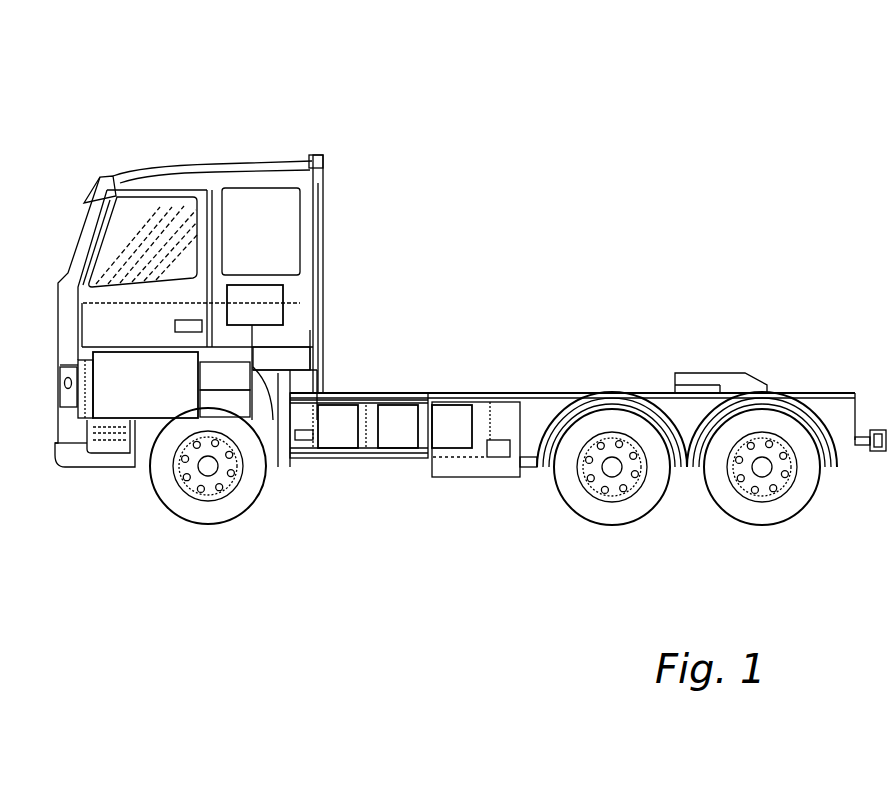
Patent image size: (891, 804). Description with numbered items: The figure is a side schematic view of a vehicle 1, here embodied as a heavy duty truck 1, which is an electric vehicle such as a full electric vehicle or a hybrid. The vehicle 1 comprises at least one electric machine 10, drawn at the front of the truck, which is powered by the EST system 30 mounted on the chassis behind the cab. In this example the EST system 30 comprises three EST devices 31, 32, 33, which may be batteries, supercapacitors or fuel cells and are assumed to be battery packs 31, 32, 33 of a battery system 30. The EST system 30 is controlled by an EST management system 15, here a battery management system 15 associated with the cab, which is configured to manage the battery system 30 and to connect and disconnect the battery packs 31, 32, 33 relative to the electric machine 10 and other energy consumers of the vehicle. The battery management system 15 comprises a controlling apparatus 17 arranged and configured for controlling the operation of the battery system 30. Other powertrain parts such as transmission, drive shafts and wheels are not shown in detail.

The vehicle 1 is at (160, 102).
The electric machine 10 is at (108, 418).
The EST management system 15 is at (329, 307).
The controlling apparatus 17 is at (284, 291).
The EST system 30 is at (416, 368).
The EST device 31 is at (333, 458).
The EST device 32 is at (383, 458).
The EST device 33 is at (443, 477).